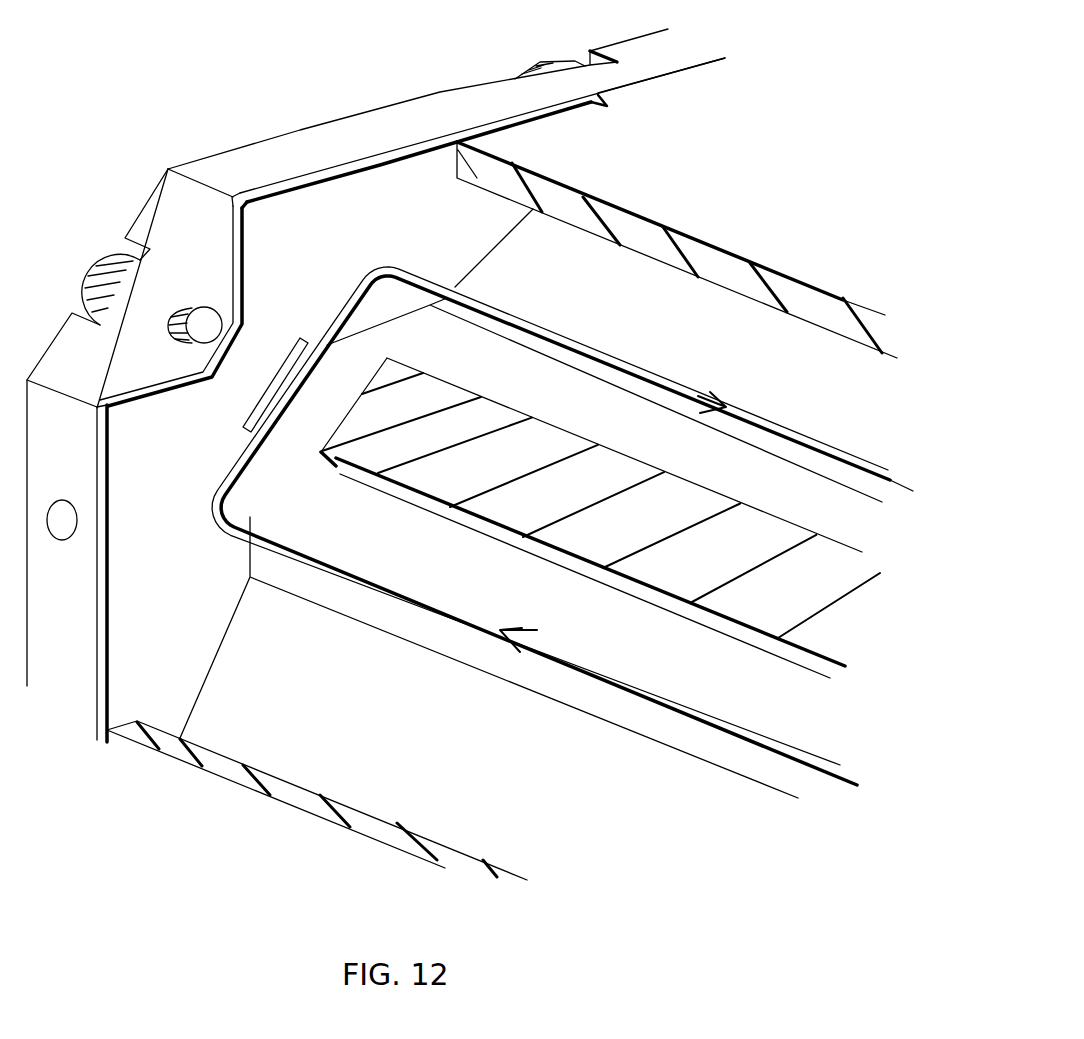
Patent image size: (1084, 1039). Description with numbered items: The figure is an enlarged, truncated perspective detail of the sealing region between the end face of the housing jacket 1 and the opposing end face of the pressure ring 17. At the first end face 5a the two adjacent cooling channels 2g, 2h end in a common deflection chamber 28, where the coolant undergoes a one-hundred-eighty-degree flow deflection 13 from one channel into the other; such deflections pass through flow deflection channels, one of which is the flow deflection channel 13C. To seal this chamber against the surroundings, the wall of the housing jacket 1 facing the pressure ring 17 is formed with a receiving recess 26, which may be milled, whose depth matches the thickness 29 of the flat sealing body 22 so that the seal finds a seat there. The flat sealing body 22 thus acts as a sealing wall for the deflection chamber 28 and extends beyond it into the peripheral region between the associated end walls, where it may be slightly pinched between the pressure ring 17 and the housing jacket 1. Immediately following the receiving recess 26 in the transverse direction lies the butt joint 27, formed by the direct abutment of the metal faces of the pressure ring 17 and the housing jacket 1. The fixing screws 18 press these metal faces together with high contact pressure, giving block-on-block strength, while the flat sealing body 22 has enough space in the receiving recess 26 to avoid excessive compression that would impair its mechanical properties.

The housing jacket 1 is at (527, 143).
The pressure ring 17 is at (297, 145).
The flat sealing body 22 is at (267, 192).
The receiving recess 26 is at (596, 106).
The butt joint 27 is at (695, 67).
The fixing screws 18 is at (553, 62).
The deflection chamber 28 is at (189, 554).
The thickness of the flat sealing body 29 is at (143, 365).
The flow deflection channel 13C is at (310, 417).
The 180°-flow deflection 13 is at (341, 305).
The first end face 5a is at (489, 241).
The cooling channel 2h is at (643, 297).
The cooling channel 2g is at (267, 750).